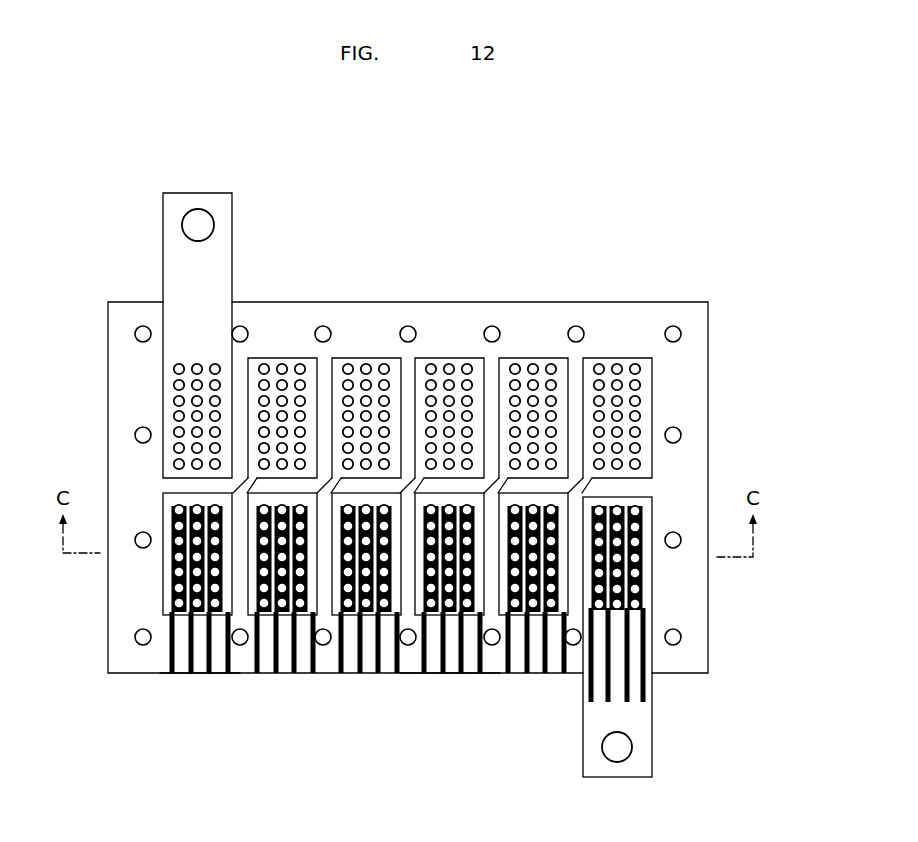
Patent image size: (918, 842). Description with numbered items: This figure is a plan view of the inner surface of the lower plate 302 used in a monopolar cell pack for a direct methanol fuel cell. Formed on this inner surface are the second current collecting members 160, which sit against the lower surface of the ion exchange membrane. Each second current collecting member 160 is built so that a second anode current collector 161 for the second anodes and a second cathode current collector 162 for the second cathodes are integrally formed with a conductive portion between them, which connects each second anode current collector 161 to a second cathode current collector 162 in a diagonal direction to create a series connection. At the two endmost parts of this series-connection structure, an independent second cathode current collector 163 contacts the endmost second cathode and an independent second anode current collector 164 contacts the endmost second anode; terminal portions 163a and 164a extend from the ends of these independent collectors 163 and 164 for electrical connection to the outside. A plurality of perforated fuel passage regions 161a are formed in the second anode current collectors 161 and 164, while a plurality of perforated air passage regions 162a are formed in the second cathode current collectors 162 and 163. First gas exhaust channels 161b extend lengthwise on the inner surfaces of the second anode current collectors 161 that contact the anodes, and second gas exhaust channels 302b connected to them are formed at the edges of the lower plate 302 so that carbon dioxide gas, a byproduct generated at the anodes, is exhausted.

The second current collecting member 160 is at (796, 358).
The second anode current collector 161 is at (163, 578).
The perforated fuel passage regions 161a is at (167, 606).
The first gas exhaust channels 161b is at (327, 608).
The second cathode current collector 162 is at (459, 346).
The perforated air passage regions 162a is at (365, 364).
The independent second cathode current collector 163 is at (150, 392).
The terminal portion 163a is at (225, 200).
The independent second anode current collector 164 is at (666, 595).
The terminal portion 164a is at (644, 757).
The lower plate 302 is at (630, 307).
The second gas exhaust channels 302b is at (166, 667).